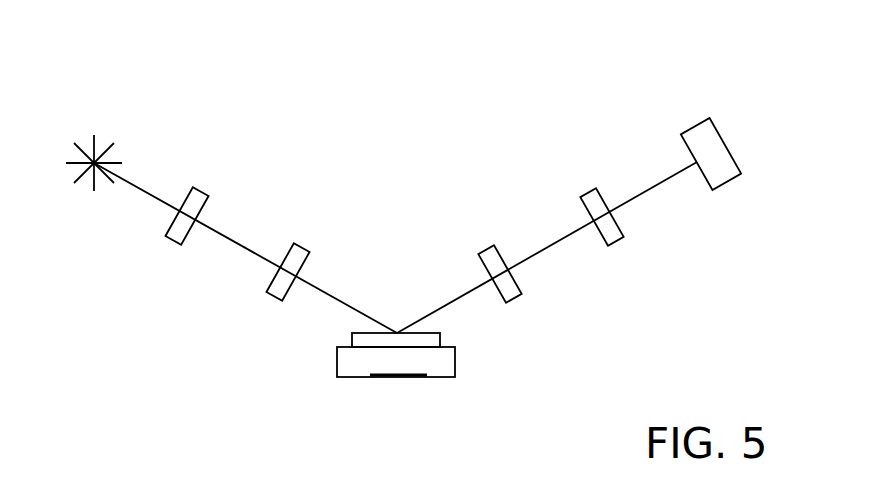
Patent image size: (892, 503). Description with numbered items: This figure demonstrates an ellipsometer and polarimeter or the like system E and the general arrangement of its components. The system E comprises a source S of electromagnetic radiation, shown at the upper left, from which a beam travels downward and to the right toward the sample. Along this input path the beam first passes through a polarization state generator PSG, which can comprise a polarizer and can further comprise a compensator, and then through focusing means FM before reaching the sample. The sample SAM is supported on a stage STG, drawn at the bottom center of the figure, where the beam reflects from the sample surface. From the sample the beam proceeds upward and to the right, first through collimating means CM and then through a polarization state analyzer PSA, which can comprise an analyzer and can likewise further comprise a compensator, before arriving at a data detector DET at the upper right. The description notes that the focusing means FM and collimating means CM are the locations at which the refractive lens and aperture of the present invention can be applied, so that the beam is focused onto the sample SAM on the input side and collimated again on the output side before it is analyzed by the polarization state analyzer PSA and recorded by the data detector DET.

The source of electromagnetic radiation S is at (112, 132).
The polarization state generator PSG is at (247, 191).
The focusing means FM is at (348, 249).
The sample SAM is at (467, 341).
The stage STG is at (396, 362).
The collimating means CM is at (572, 280).
The polarization state analyzer PSA is at (564, 189).
The data detector DET is at (760, 139).
The ellipsometer and polarimeter or the like system E is at (553, 46).